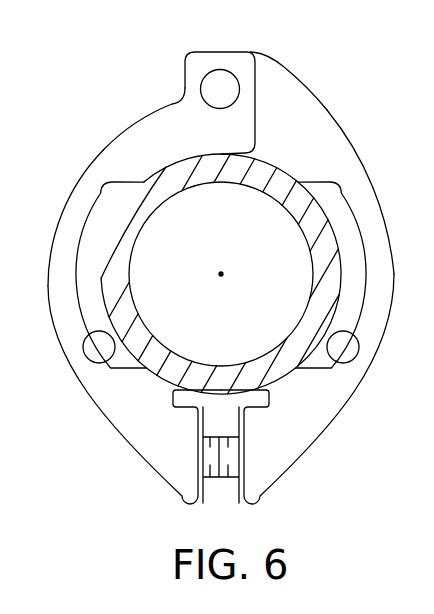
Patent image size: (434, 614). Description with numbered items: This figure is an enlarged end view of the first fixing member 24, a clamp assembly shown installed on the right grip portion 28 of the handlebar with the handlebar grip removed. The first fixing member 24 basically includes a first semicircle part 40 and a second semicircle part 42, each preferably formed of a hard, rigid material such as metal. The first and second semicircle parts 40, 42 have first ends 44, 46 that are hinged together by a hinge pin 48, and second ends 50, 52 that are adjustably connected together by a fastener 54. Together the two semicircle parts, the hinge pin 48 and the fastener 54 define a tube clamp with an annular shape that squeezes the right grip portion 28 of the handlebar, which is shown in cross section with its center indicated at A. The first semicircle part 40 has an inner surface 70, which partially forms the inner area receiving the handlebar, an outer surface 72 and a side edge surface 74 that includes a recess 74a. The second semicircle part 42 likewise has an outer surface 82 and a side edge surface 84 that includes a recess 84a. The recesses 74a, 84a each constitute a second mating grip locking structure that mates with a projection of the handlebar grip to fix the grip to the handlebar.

The first fixing member 24 is at (83, 106).
The right grip portion 28 is at (280, 165).
The first semicircle part 40 is at (61, 190).
The second semicircle part 42 is at (368, 158).
The first end 44 is at (190, 93).
The first end 46 is at (272, 92).
The hinge pin 48 is at (218, 86).
The second end 50 is at (180, 458).
The second end 52 is at (260, 463).
The fastener 54 is at (227, 460).
The inner surface 70 is at (180, 160).
The outer surface 72 is at (143, 118).
The side edge surface 74 is at (58, 268).
The recess 74a is at (103, 366).
The outer surface 82 is at (327, 110).
The side edge surface 84 is at (382, 268).
The recess 84a is at (338, 368).
The central axis A is at (225, 272).